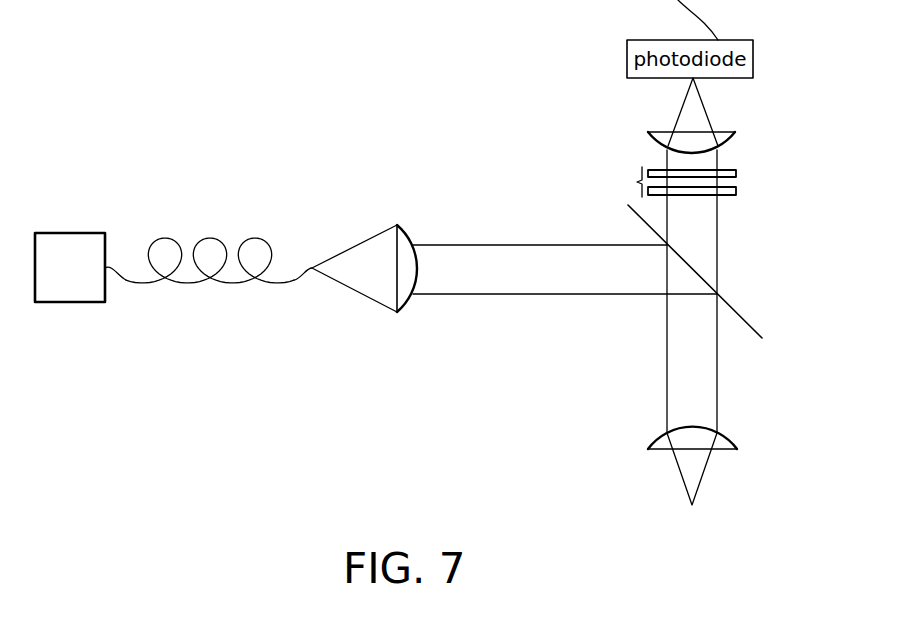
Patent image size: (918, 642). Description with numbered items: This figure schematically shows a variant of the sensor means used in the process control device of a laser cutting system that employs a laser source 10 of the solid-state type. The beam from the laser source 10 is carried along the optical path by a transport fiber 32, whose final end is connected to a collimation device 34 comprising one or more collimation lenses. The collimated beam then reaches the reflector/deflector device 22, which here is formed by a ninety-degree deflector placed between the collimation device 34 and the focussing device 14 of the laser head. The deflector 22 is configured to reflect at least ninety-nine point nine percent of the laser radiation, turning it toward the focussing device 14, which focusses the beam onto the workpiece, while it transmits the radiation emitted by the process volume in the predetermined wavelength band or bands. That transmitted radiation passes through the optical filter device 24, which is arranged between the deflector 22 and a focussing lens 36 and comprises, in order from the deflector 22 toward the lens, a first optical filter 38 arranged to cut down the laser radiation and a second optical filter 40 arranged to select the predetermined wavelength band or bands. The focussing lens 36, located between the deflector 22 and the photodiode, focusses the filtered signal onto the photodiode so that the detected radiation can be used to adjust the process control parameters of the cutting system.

The laser source 10 is at (68, 303).
The transport fiber 32 is at (222, 284).
The collimation device 34 is at (405, 303).
The reflector/deflector device 22 is at (703, 276).
The optical filter device 24 is at (638, 183).
The focussing lens 36 is at (736, 141).
The second optical filter 40 is at (737, 173).
The first optical filter 38 is at (737, 191).
The focussing device 14 is at (722, 432).